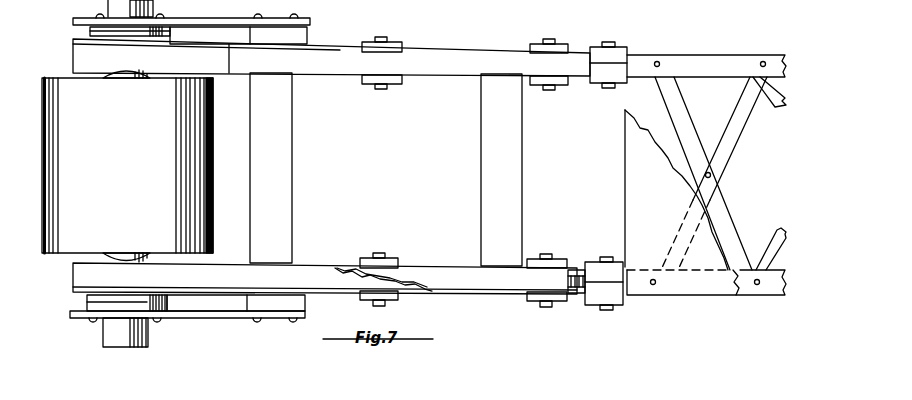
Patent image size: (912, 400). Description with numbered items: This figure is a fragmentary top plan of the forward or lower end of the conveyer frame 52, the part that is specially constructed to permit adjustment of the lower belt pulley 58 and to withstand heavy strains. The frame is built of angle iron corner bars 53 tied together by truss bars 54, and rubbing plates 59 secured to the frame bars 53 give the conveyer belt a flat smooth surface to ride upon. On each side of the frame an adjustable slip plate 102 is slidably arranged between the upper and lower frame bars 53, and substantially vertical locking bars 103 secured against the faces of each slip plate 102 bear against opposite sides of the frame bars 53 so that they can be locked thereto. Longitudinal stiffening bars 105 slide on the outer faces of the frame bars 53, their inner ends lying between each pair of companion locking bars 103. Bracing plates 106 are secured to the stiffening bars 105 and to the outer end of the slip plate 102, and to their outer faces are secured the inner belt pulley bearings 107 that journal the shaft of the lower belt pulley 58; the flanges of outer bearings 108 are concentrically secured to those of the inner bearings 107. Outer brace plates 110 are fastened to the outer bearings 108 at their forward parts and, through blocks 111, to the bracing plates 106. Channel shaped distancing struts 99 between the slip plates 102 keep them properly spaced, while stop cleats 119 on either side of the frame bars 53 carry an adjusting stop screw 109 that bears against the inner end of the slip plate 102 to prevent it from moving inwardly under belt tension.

The conveyer frame 52 is at (672, 79).
The angle iron corner bars 53 is at (715, 60).
The truss bars 54 is at (697, 150).
The belt pulley 58 is at (127, 165).
The rubbing plates 59 is at (676, 190).
The channel shaped distancing struts 99 is at (287, 171).
The slip plate 102 is at (445, 278).
The locking bars 103 is at (395, 84).
The stiffening bars 105 is at (433, 68).
The bracing plates 106 is at (224, 42).
The inner belt pulley bearings 107 is at (105, 75).
The outer bearings 108 is at (74, 21).
The adjusting stop screw 109 is at (577, 272).
The outer brace plates 110 is at (232, 18).
The blocks 111 is at (307, 34).
The stop cleats 119 is at (617, 50).